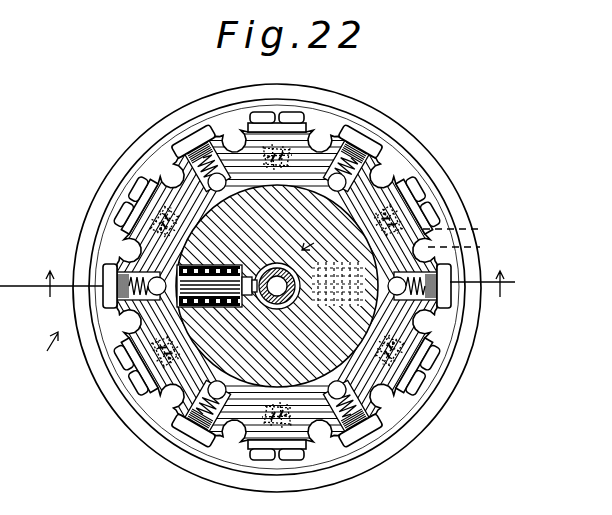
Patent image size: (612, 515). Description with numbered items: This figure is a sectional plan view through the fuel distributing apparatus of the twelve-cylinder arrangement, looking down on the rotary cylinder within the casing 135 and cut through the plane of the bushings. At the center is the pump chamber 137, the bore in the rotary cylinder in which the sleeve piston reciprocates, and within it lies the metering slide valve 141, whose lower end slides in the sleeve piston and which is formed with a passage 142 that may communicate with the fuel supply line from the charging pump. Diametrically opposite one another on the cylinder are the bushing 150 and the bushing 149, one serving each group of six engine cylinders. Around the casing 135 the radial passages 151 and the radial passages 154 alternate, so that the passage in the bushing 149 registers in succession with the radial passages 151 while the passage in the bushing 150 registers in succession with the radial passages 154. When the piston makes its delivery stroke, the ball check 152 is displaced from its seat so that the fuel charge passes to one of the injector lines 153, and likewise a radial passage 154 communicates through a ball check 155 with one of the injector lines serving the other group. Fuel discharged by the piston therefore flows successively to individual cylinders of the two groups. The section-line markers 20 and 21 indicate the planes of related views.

The casing 135 is at (380, 168).
The injector lines 153 is at (400, 212).
The ball check 152 is at (469, 226).
The radial passages 151 is at (472, 244).
The radial passages 154 is at (162, 271).
The ball check 155 is at (160, 278).
The passage 142 is at (271, 266).
The metering slide valve 141 is at (283, 262).
The pump chamber 137 is at (282, 310).
The bushing 150 is at (226, 304).
The bushing 149 is at (337, 302).
The section line 20- 20 is at (270, 284).
The section line 21- 21 is at (176, 297).